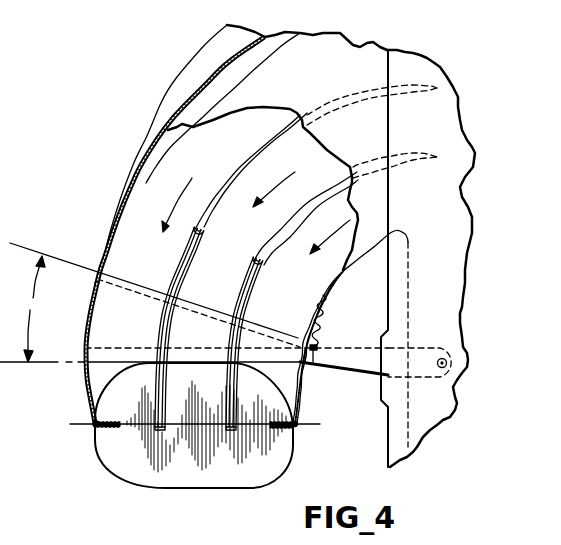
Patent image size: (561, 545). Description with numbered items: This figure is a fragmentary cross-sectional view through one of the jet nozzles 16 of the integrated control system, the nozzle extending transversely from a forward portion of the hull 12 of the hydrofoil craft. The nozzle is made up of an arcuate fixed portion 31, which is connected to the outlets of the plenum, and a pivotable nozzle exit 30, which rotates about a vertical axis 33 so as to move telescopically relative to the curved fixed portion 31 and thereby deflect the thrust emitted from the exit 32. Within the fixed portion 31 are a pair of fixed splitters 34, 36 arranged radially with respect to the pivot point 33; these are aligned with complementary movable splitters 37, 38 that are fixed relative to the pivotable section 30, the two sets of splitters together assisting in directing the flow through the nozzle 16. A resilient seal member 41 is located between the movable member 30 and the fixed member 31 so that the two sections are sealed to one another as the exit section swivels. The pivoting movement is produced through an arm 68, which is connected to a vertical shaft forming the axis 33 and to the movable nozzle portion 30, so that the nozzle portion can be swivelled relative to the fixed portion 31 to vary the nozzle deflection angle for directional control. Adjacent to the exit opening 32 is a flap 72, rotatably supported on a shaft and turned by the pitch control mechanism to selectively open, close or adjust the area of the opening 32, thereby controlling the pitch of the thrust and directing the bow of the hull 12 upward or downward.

The hull 12 is at (455, 187).
The jet nozzle 16 is at (120, 175).
The nozzle exit 30 is at (88, 395).
The arcuate fixed portion 31 is at (164, 147).
The exit 32 is at (132, 472).
The vertical axis 33 is at (437, 362).
The fixed splitter 34 is at (230, 182).
The fixed splitter 36 is at (297, 207).
The movable splitter 37 is at (157, 322).
The movable splitter 38 is at (230, 337).
The resilient seal member 41 is at (105, 241).
The arm 68 is at (340, 362).
The flap 72 is at (253, 490).